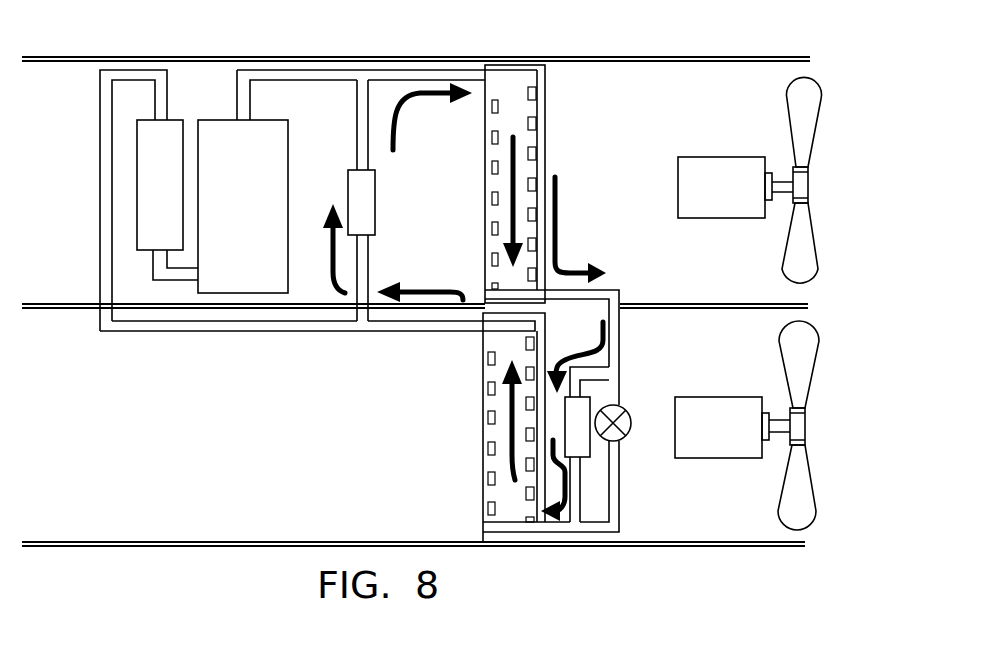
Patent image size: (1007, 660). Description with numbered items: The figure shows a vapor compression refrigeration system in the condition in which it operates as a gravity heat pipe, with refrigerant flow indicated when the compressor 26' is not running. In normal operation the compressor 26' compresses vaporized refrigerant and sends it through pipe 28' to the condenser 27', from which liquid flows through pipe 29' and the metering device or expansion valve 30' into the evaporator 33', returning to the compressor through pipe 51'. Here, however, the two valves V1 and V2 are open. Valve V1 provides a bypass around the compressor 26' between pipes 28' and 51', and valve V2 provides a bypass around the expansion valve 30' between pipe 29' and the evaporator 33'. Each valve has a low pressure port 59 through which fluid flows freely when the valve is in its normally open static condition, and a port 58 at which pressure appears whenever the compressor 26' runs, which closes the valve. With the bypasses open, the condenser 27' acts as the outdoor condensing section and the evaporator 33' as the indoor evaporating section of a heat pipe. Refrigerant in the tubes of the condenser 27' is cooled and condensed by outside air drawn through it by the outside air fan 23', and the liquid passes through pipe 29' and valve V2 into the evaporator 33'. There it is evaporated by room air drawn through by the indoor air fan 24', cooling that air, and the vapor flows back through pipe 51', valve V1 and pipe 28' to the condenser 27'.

The pipe 28' is at (387, 51).
The condenser 27' is at (541, 184).
The outside air fan 23' is at (769, 180).
The indoor air fan 24' is at (768, 425).
The compressor 26' is at (262, 206).
The port 58 is at (360, 157).
The low pressure port 59 is at (362, 266).
The valve V1 is at (357, 212).
The valve V2 is at (575, 418).
The pipe 51' is at (317, 344).
The evaporator 33' is at (491, 427).
The pipe 29' is at (573, 411).
The expansion valve 30' is at (629, 441).